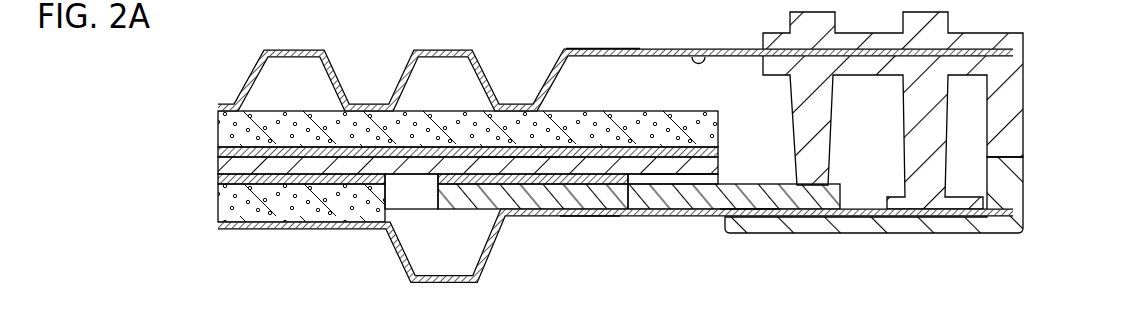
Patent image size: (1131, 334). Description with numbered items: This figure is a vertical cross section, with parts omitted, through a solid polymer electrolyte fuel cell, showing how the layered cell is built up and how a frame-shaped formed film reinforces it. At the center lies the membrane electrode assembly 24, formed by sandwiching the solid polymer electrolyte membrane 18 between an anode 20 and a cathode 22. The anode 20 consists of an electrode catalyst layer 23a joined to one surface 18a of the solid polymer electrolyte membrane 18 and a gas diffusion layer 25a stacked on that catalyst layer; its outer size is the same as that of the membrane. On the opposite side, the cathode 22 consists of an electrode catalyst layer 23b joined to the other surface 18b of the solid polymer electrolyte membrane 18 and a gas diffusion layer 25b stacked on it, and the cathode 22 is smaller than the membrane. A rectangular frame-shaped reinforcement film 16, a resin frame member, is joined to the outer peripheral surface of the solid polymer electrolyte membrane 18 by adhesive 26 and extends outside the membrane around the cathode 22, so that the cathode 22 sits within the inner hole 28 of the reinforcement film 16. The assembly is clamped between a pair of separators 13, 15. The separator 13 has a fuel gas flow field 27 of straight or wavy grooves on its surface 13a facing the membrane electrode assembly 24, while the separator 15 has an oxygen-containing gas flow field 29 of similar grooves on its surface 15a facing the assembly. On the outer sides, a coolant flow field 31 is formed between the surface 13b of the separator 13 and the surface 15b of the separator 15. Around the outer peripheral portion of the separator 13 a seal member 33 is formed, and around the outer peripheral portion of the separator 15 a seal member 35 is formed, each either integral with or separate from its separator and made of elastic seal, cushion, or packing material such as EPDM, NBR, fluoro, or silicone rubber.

The separator 13 is at (606, 54).
The surface of the separator 13 13a is at (707, 47).
The surface of the separator 13 13b is at (612, 48).
The separator 15 is at (606, 228).
The surface of the separator 15 15a is at (741, 210).
The surface of the separator 15 15b is at (597, 217).
The reinforcement film 16 is at (713, 195).
The solid polymer electrolyte membrane 18 is at (420, 157).
The one surface of the solid polymer electrolyte membrane 18a is at (525, 157).
The other surface of the solid polymer electrolyte membrane 18b is at (672, 175).
The anode 20 is at (419, 127).
The cathode 22 is at (375, 206).
The electrode catalyst layer 23a is at (222, 152).
The electrode catalyst layer 23b is at (222, 178).
The membrane electrode assembly 24 is at (400, 157).
The gas diffusion layer 25a is at (230, 122).
The gas diffusion layer 25b is at (222, 212).
The adhesive 26 is at (545, 195).
The fuel gas flow field 27 is at (272, 78).
The inner hole 28 is at (425, 200).
The oxygen-containing gas flow field 29 is at (275, 250).
The coolant flow field 31 is at (363, 255).
The seal member 33 is at (1017, 90).
The seal member 35 is at (1017, 190).